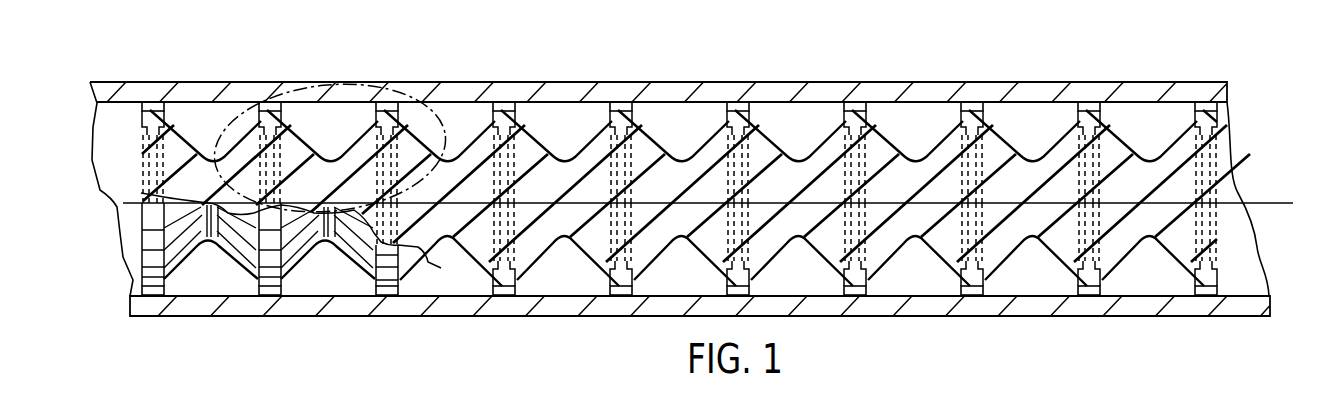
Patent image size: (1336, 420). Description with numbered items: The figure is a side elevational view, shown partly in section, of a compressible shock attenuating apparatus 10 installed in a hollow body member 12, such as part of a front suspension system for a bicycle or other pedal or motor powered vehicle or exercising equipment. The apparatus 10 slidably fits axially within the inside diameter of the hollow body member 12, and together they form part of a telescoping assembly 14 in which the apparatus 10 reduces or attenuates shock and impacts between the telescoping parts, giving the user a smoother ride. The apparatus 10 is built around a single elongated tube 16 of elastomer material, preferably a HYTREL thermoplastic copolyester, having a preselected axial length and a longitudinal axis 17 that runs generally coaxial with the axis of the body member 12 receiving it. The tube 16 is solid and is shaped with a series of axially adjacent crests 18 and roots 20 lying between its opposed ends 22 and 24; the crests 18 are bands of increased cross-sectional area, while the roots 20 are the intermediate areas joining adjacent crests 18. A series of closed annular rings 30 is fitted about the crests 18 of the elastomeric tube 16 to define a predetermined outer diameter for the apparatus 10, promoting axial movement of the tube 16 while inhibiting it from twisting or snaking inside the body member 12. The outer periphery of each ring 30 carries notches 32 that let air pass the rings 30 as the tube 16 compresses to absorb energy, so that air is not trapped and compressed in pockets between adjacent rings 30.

The shock attenuating apparatus 10 is at (1262, 132).
The hollow body member 12 is at (932, 88).
The telescoping assembly 14 is at (1089, 55).
The elongated tube 16 is at (923, 262).
The longitudinal axis 17 is at (428, 205).
The crests 18 is at (333, 117).
The roots 20 is at (565, 157).
The end 22 is at (143, 258).
The end 24 is at (1218, 229).
The closed annular rings 30 is at (737, 93).
The notches 32 is at (153, 103).